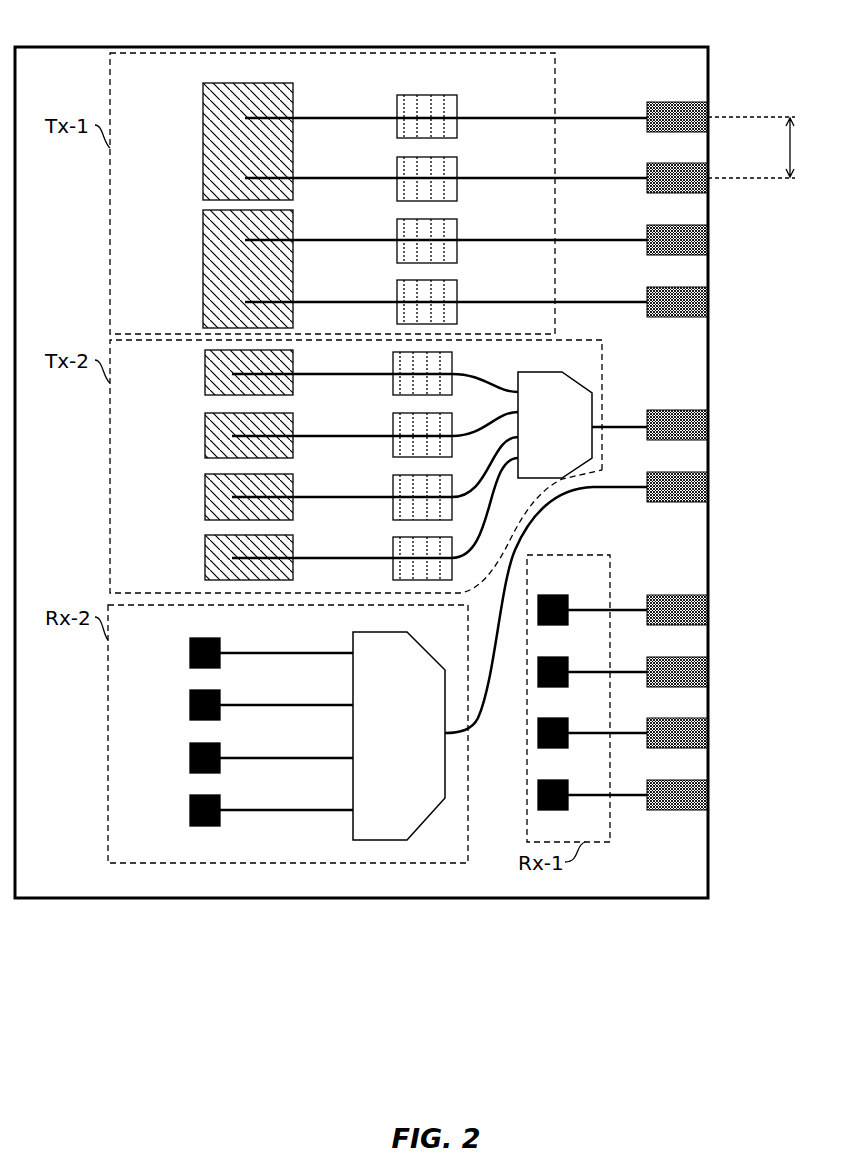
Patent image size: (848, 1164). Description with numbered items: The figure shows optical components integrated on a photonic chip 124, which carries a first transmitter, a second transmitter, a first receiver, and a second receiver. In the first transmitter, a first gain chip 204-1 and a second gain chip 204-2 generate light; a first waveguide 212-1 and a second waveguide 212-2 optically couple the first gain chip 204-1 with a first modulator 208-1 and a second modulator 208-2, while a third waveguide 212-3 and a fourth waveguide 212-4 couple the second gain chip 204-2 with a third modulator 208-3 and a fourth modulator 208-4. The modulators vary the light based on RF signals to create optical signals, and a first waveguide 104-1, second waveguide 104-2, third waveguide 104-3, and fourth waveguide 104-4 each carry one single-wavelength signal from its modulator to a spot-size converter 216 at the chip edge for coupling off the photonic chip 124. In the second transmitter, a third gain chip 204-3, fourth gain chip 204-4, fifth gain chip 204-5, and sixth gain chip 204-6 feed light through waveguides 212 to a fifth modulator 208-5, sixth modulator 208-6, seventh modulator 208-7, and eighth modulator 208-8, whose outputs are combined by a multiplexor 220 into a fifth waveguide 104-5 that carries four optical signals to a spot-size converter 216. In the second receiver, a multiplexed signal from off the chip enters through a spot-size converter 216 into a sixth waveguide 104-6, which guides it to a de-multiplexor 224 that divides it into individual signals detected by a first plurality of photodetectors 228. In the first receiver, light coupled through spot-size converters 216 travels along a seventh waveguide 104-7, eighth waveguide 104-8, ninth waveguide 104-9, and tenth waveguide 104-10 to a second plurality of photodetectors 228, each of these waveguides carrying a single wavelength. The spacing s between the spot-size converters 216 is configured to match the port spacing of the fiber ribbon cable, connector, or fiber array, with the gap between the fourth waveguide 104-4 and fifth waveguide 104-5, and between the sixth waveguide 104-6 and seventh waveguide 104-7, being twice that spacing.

The photonic chip 124 is at (488, 47).
The first gain chip 204-1 is at (203, 132).
The second gain chip 204-2 is at (203, 278).
The third gain chip 204-3 is at (205, 370).
The fourth gain chip 204-4 is at (205, 430).
The fifth gain chip 204-5 is at (205, 490).
The sixth gain chip 204-6 is at (205, 552).
The first waveguide 212-1 is at (307, 118).
The second waveguide 212-2 is at (307, 178).
The third waveguide 212-3 is at (307, 240).
The fourth waveguide 212-4 is at (307, 302).
The waveguides 212 is at (305, 374).
The first modulator 208-1 is at (457, 95).
The second modulator 208-2 is at (457, 157).
The third modulator 208-3 is at (457, 219).
The fourth modulator 208-4 is at (457, 280).
The fifth modulator 208-5 is at (393, 381).
The sixth modulator 208-6 is at (393, 443).
The seventh modulator 208-7 is at (393, 505).
The eighth modulator 208-8 is at (393, 567).
The first waveguide 104-1 is at (569, 118).
The second waveguide 104-2 is at (569, 178).
The third waveguide 104-3 is at (569, 240).
The fourth waveguide 104-4 is at (569, 302).
The fifth waveguide 104-5 is at (615, 427).
The sixth waveguide 104-6 is at (615, 487).
The seventh waveguide 104-7 is at (615, 610).
The eighth waveguide 104-8 is at (615, 672).
The ninth waveguide 104-9 is at (615, 733).
The tenth waveguide 104-10 is at (615, 795).
The spot-size converter 216 is at (710, 117).
The multiplexor (MUX) 220 is at (522, 427).
The de-multiplexor (DEMUX) 224 is at (356, 730).
The photodetectors 228 is at (192, 641).
The spacing s is at (791, 150).